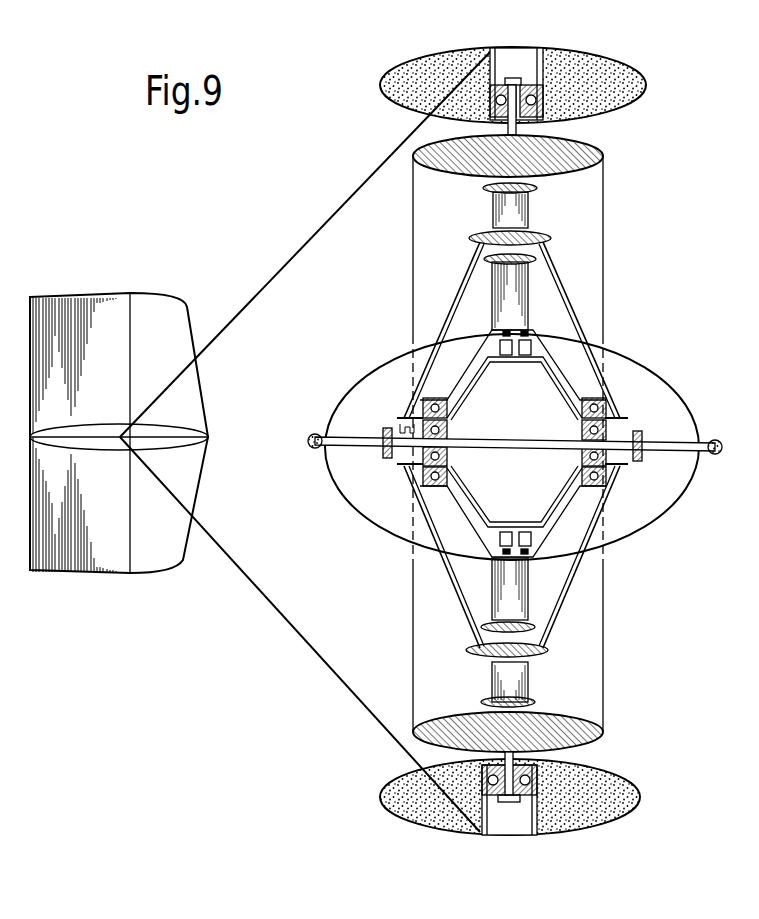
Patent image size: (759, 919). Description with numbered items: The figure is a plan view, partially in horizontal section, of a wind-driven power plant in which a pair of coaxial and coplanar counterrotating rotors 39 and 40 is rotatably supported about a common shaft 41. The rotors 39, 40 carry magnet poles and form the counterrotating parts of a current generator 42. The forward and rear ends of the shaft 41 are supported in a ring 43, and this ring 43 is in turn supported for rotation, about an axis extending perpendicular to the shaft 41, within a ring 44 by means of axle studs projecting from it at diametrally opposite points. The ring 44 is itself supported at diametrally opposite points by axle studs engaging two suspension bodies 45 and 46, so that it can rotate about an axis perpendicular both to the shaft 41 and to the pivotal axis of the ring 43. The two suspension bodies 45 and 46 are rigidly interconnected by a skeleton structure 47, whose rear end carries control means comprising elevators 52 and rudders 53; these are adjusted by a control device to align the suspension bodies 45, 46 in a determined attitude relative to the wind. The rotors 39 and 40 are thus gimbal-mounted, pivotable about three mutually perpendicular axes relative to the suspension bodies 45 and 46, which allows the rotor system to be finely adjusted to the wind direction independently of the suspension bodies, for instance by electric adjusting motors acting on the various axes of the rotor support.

The rotor 39 is at (533, 208).
The rotor 40 is at (527, 285).
The shaft 41 is at (517, 440).
The current generator 42 is at (538, 541).
The ring 43 is at (716, 456).
The ring 44 is at (603, 144).
The suspension body 45 is at (613, 74).
The suspension body 46 is at (598, 785).
The skeleton structure 47 is at (308, 238).
The elevators 52 is at (80, 297).
The rudders 53 is at (95, 442).